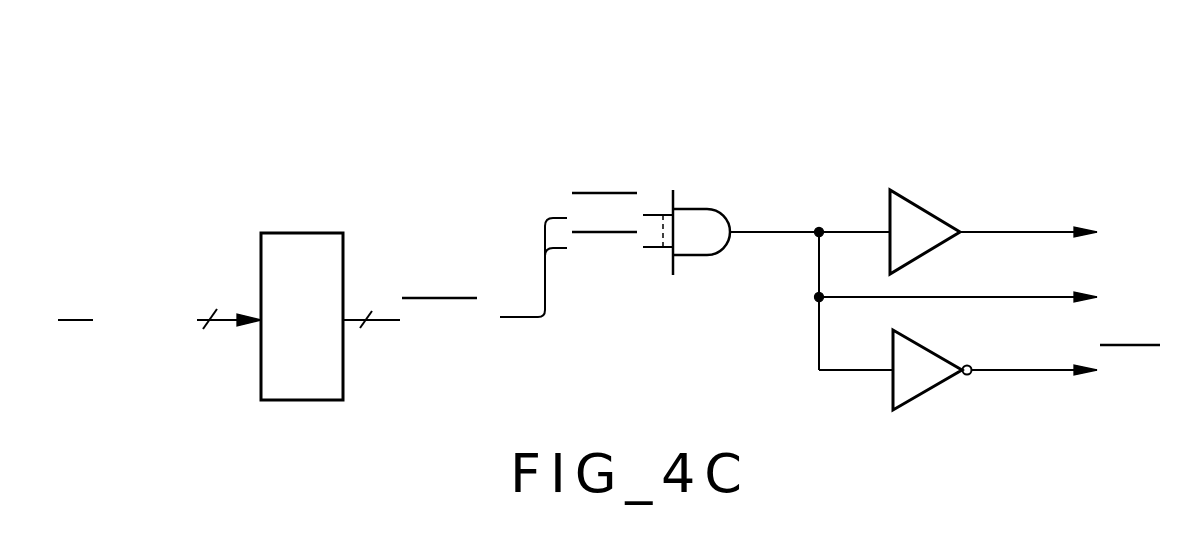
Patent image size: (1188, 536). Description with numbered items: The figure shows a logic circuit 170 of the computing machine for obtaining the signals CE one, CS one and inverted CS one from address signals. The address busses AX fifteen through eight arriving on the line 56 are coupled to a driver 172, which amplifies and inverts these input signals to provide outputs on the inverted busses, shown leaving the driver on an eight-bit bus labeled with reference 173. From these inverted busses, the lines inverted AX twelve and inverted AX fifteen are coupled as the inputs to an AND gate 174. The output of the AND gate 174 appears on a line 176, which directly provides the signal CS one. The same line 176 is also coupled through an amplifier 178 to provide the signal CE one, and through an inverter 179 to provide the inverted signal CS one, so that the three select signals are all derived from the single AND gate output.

The line 56 is at (222, 317).
The driver 172 is at (317, 233).
The driver output bus 173 is at (390, 322).
The logic circuit 170 is at (530, 345).
The AND gate 174 is at (707, 209).
The line 176 is at (787, 230).
The amplifier 178 is at (923, 204).
The inverter 179 is at (923, 338).